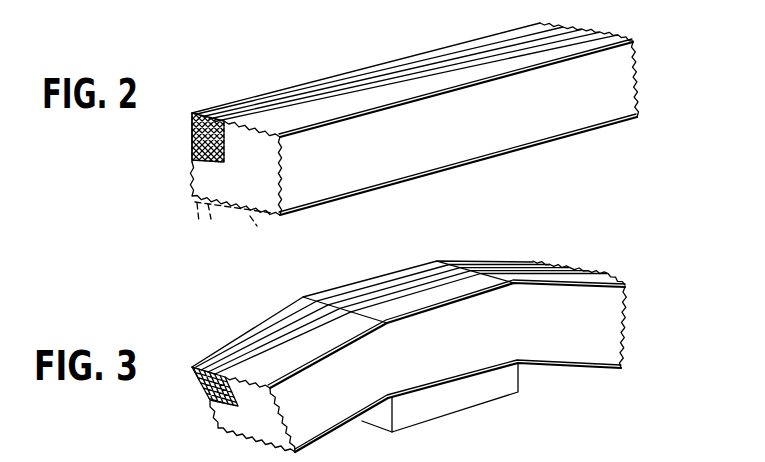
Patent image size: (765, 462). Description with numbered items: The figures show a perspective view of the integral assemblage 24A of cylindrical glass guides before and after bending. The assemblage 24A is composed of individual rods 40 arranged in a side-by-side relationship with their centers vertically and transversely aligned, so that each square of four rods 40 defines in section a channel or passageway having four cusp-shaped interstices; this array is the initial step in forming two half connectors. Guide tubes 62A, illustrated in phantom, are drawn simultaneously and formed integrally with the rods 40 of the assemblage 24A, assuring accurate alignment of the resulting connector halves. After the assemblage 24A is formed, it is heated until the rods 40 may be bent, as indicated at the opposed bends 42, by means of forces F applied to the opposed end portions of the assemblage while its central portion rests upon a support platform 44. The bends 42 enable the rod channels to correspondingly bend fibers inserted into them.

In FIG. 2, the assemblage 24A is at (323, 77).
In FIG. 2, the rods 40 is at (206, 111).
In FIG. 2, the tubes 62A is at (245, 217).
In FIG. 3, the bends 42 is at (383, 328).
In FIG. 3, the support platform 44 is at (465, 402).
In FIG. 3, the forces F is at (289, 348).